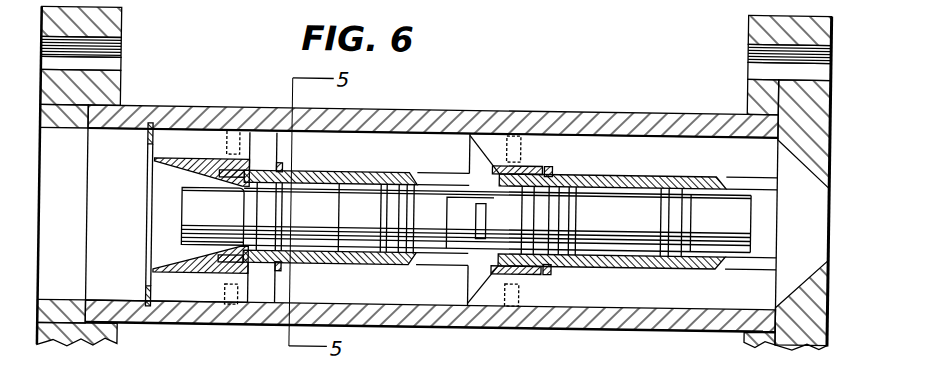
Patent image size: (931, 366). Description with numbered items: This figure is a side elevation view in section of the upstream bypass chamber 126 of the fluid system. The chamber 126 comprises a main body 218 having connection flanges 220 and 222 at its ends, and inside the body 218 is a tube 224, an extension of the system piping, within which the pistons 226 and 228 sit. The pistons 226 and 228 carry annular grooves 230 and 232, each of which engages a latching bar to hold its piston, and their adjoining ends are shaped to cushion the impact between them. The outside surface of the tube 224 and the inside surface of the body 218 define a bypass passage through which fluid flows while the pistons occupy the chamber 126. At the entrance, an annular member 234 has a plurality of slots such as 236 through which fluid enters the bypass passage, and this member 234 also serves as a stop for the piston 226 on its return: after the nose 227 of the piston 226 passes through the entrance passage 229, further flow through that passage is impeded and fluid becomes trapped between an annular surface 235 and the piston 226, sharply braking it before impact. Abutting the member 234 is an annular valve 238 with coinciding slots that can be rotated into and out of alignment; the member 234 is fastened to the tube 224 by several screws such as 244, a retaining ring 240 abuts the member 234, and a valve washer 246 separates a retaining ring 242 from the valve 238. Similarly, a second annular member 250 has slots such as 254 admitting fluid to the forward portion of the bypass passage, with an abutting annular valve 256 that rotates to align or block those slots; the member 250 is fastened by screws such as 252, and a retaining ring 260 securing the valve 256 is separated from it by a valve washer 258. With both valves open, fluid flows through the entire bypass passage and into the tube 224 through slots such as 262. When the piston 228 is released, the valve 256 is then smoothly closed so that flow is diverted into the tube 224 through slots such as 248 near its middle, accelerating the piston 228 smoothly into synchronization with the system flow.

The upstream bypass chamber 126 is at (478, 84).
The main body 218 is at (632, 107).
The connection flange 220 is at (120, 82).
The connection flange 222 is at (748, 78).
The tube 224 is at (368, 258).
The piston 226 is at (420, 243).
The nose 227 is at (183, 204).
The piston 228 is at (752, 205).
The entrance passage 229 is at (205, 248).
The annular groove 230 is at (293, 184).
The annular groove 232 is at (570, 196).
The annular member 234 is at (155, 254).
The annular surface 235 is at (183, 192).
The slot 236 is at (188, 289).
The annular valve 238 is at (277, 157).
The retaining ring 240 is at (148, 124).
The retaining ring 242 is at (298, 259).
The screw 244 is at (240, 126).
The valve washer 246 is at (266, 316).
The slot 248 is at (423, 158).
The annular member 250 is at (508, 166).
The screw 252 is at (532, 118).
The slot 254 is at (484, 296).
The annular valve 256 is at (636, 154).
The valve washer 258 is at (557, 269).
The retaining ring 260 is at (557, 264).
The slot 262 is at (776, 173).